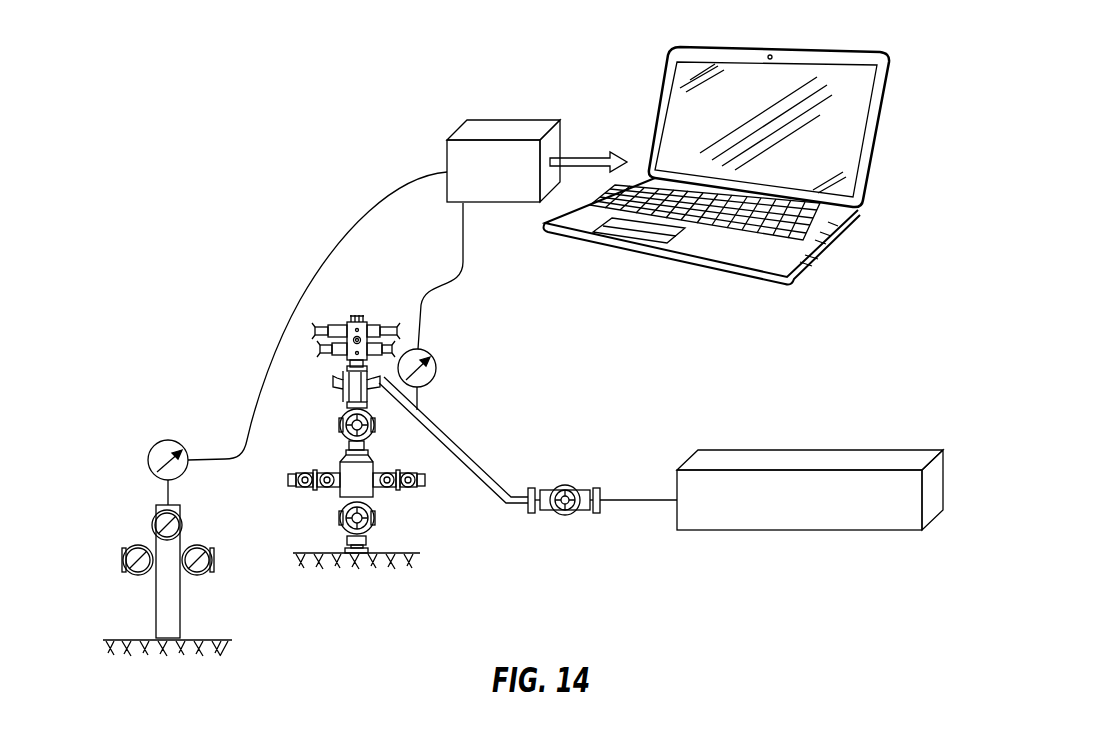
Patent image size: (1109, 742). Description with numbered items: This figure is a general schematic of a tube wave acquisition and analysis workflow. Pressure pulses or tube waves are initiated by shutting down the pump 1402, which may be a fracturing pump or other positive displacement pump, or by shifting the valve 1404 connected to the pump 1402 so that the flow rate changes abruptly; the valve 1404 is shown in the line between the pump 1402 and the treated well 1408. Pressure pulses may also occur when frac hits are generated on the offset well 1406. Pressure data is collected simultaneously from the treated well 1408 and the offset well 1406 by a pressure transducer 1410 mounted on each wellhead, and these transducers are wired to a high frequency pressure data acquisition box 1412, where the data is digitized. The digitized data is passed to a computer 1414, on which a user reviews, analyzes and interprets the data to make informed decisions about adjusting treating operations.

The pump 1402 is at (810, 462).
The valve 1404 is at (562, 482).
The offset well 1406 is at (213, 598).
The treated well 1408 is at (405, 510).
The pressure transducer 1410 is at (170, 440).
The high frequency pressure data acquisition box 1412 is at (503, 130).
The computer 1414 is at (690, 263).